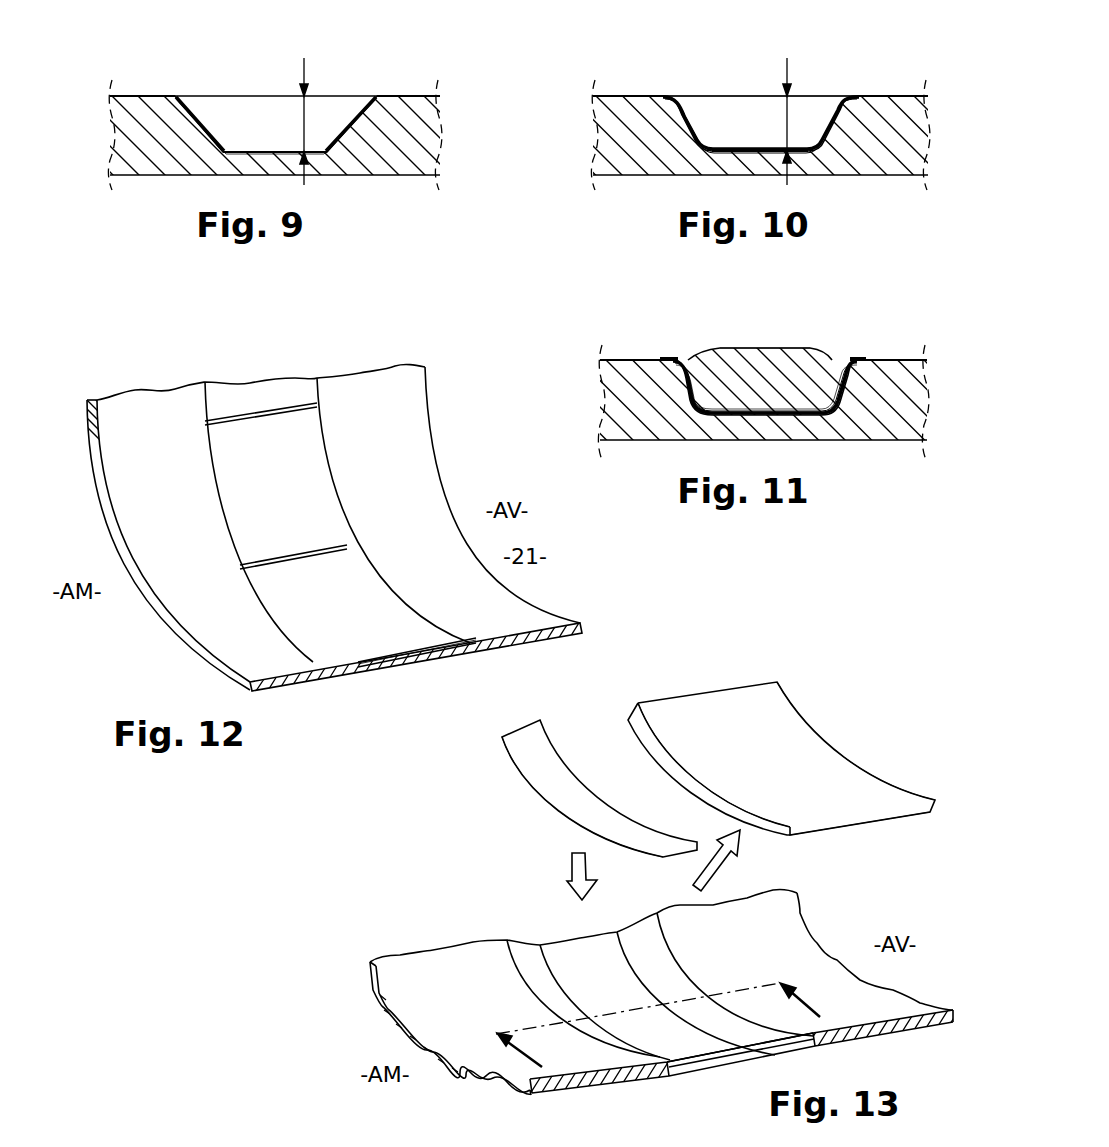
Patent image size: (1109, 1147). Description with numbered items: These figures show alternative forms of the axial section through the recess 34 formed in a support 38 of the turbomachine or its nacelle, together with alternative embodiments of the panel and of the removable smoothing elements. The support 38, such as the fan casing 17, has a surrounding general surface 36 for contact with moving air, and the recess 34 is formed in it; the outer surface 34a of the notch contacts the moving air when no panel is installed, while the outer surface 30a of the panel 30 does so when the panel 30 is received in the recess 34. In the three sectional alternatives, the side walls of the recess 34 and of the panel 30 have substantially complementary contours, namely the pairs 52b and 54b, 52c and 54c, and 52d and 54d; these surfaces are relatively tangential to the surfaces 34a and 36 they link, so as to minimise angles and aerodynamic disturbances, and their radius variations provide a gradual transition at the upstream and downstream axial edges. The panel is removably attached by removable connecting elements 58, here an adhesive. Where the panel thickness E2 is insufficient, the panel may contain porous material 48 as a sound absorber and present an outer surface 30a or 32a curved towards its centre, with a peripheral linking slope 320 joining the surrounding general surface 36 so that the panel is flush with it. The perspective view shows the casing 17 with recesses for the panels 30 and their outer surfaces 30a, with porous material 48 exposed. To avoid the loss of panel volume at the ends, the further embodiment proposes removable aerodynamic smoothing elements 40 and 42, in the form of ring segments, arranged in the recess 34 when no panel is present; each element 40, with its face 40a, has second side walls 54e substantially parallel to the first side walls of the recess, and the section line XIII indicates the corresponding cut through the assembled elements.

In FIG. 12, the fan casing 17 is at (197, 456).
In FIG. 9, the acoustic panel 30 is at (258, 92).
In FIG. 10, the acoustic panel 30 is at (763, 100).
In FIG. 12, the acoustic panel 30 is at (250, 448).
In FIG. 13, the acoustic panel 30 is at (732, 732).
In FIG. 10, the outer surface of panel 30a is at (740, 96).
In FIG. 12, the outer surface of panel 30a is at (287, 427).
In FIG. 13, the outer surface of panel 30a is at (805, 778).
In FIG. 11, the outer surface of panel 32a is at (765, 348).
In FIG. 9, the recess 34 is at (345, 148).
In FIG. 10, the recess 34 is at (761, 123).
In FIG. 11, the recess 34 is at (848, 390).
In FIG. 13, the recess 34 is at (677, 1037).
In FIG. 9, the outer surface of the notch 34a is at (253, 135).
In FIG. 10, the outer surface of the notch 34a is at (820, 110).
In FIG. 9, the surrounding general surface 36 is at (146, 96).
In FIG. 10, the surrounding general surface 36 is at (630, 96).
In FIG. 11, the surrounding general surface 36 is at (888, 360).
In FIG. 12, the surrounding general surface 36 is at (400, 480).
In FIG. 13, the surrounding general surface 36 is at (511, 1063).
In FIG. 9, the support 38 is at (408, 168).
In FIG. 10, the support 38 is at (670, 170).
In FIG. 11, the support 38 is at (896, 420).
In FIG. 12, the support 38 is at (158, 651).
In FIG. 13, the support 38 is at (377, 1015).
In FIG. 13, the removable aerodynamic smoothing element 40 is at (647, 942).
In FIG. 13, the strip face 40a is at (603, 830).
In FIG. 13, the removable aerodynamic smoothing element 42 is at (525, 961).
In FIG. 11, the porous material 48 is at (735, 380).
In FIG. 12, the porous material 48 is at (413, 637).
In FIG. 13, the porous material 48 is at (880, 820).
In FIG. 9, the side wall of recess 52b is at (222, 115).
In FIG. 10, the side wall of recess 52c is at (670, 130).
In FIG. 11, the side wall of recess 52d is at (678, 402).
In FIG. 9, the side wall of panel 54b is at (180, 96).
In FIG. 10, the side wall of panel 54c is at (685, 118).
In FIG. 11, the side wall of panel 54d is at (700, 390).
In FIG. 13, the second side wall 54e is at (705, 840).
In FIG. 9, the removable connecting element 58 is at (187, 155).
In FIG. 11, the removable connecting element 58 is at (685, 415).
In FIG. 11, the linking slope 320 is at (668, 358).
In FIG. 9, the panel thickness E2 is at (303, 118).
In FIG. 10, the panel thickness E2 is at (787, 118).
In FIG. 13, the section line XIII is at (674, 1025).